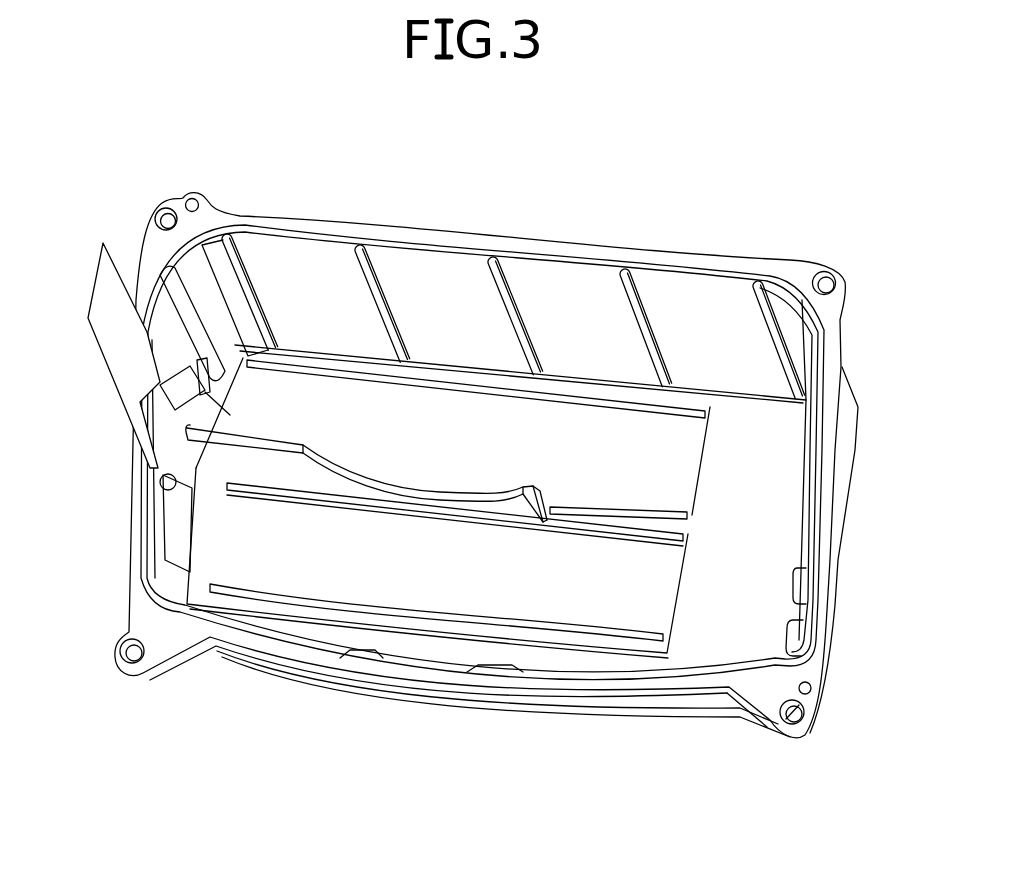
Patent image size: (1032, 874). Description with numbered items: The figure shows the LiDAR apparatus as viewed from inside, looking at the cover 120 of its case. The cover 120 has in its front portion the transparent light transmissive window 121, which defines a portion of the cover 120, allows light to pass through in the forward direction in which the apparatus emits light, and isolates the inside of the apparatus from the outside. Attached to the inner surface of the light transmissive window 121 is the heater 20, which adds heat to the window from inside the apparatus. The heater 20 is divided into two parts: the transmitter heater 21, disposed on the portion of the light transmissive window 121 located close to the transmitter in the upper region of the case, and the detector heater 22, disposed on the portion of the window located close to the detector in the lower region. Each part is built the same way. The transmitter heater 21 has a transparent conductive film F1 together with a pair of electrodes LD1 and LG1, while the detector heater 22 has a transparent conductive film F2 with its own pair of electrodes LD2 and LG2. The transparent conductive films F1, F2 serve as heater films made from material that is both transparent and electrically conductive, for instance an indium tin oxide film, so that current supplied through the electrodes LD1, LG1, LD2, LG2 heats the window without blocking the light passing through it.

The cover 120 is at (636, 122).
The light transmissive window 121 is at (755, 623).
The heater 20 is at (405, 813).
The transmitter heater 21 is at (388, 438).
The detector heater 22 is at (303, 550).
The electrode LD1 is at (462, 398).
The electrode LD2 is at (472, 620).
The electrode LG1 is at (603, 507).
The electrode LG2 is at (517, 527).
The transparent conductive film F1 is at (680, 443).
The transparent conductive film F2 is at (665, 560).